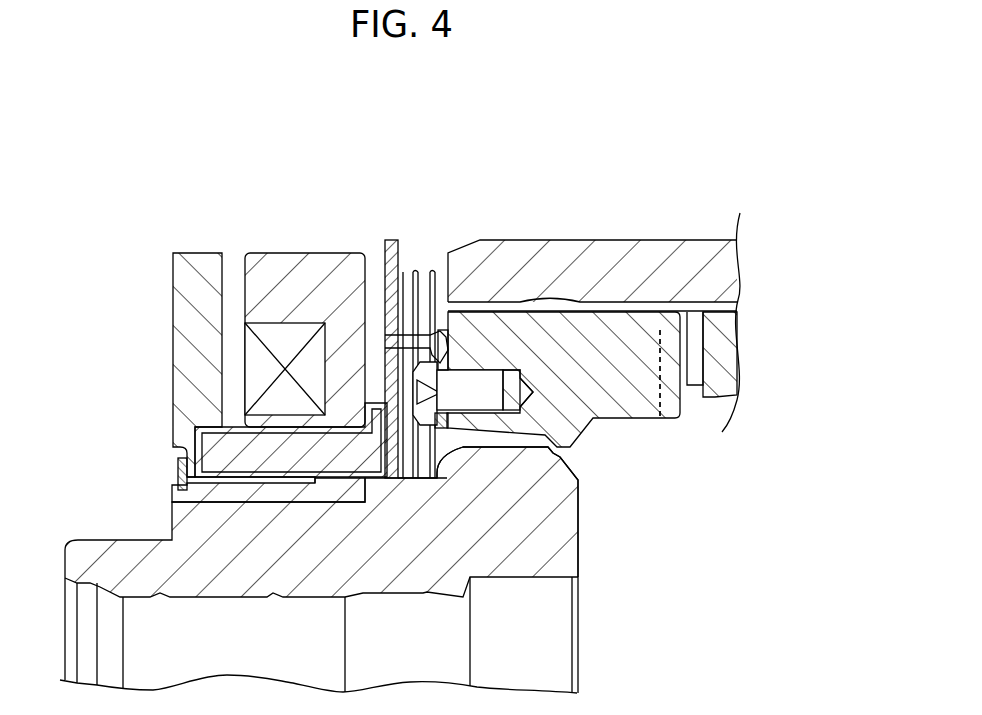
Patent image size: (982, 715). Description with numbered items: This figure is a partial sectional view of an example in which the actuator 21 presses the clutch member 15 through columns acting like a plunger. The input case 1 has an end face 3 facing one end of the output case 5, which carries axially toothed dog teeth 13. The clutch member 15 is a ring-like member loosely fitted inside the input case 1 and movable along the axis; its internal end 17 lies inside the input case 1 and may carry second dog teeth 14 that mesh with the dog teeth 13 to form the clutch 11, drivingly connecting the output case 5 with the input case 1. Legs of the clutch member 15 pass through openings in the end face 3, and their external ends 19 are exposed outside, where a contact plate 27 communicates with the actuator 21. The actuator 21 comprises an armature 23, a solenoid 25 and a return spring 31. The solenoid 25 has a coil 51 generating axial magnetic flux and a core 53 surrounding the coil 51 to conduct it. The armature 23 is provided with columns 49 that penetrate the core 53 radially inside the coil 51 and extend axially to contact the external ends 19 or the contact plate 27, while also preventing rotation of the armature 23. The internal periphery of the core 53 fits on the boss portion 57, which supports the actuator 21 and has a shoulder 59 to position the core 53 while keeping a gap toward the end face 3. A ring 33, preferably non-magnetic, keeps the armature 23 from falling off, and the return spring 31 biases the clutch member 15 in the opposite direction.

The input case 1 is at (679, 238).
The end face 3 is at (436, 272).
The output case 5 is at (740, 333).
The clutch 11 is at (688, 406).
The dog teeth 13 is at (690, 390).
The second dog teeth 14 is at (656, 395).
The clutch member 15 is at (617, 420).
The internal end 17 is at (660, 330).
The external ends 19 is at (467, 302).
The actuator 21 is at (226, 281).
The armature 23 is at (173, 337).
The solenoid 25 is at (290, 282).
The contact plate 27 is at (396, 240).
The return spring 31 is at (413, 265).
The ring 33 is at (180, 472).
The columns 49 is at (230, 420).
The coil 51 is at (252, 353).
The core 53 is at (297, 280).
The boss portion 57 is at (187, 600).
The shoulder 59 is at (337, 475).